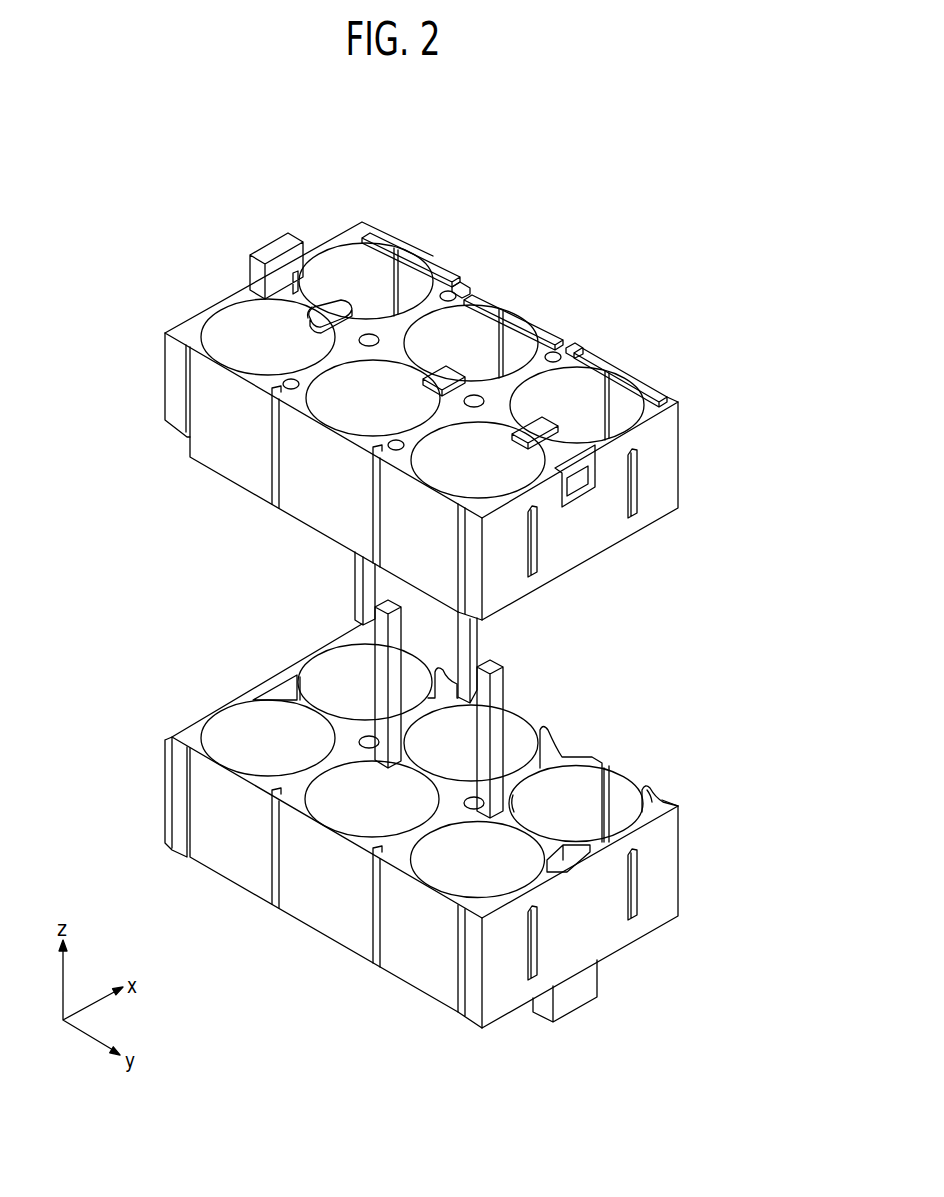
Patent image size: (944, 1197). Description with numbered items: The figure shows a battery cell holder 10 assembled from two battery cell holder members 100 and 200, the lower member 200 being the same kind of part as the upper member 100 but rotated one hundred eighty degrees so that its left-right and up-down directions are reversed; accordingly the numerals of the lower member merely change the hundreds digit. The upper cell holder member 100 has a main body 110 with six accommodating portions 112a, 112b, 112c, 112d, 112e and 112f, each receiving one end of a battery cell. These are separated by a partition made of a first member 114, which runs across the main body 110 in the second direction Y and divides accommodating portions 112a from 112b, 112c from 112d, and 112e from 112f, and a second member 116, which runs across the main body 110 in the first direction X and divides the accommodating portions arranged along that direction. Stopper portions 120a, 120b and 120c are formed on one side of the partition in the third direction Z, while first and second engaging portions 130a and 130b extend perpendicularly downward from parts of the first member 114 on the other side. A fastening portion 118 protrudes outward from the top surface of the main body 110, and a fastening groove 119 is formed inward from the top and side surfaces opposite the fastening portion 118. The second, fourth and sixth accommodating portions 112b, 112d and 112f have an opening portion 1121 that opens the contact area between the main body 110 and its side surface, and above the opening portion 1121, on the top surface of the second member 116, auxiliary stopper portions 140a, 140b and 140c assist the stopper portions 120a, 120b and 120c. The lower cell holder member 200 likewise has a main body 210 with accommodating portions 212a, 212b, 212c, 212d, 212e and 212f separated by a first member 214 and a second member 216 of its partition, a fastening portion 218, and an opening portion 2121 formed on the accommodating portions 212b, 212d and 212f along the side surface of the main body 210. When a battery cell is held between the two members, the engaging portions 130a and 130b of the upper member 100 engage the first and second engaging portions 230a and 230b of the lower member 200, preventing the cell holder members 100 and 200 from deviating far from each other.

The battery cell holder 10 is at (171, 112).
The battery cell holder member 100 is at (128, 238).
The main body 110 is at (668, 486).
The first accommodating portion 112a is at (225, 338).
The second accommodating portion 112b is at (363, 270).
The third accommodating portion 112c is at (354, 417).
The fourth accommodating portion 112d is at (459, 325).
The fifth accommodating portion 112e is at (492, 473).
The sixth accommodating portion 112f is at (578, 383).
The opening portion 1121 is at (336, 322).
The first member of partition 114 is at (312, 304).
The second member of partition 116 is at (450, 282).
The fastening portion 118 is at (250, 263).
The fastening groove 119 is at (576, 482).
The stopper portion 120a is at (340, 297).
The stopper portion 120b is at (451, 375).
The stopper portion 120c is at (556, 425).
The first engaging portion 130a is at (365, 580).
The second engaging portion 130b is at (476, 634).
The auxiliary stopper portion 140a is at (384, 237).
The auxiliary stopper portion 140b is at (548, 332).
The auxiliary stopper portion 140c is at (644, 388).
The battery cell holder member 200 is at (128, 708).
The main body 210 is at (670, 892).
The first accommodating portion 212a is at (444, 875).
The second accommodating portion 212b is at (578, 778).
The third accommodating portion 212c is at (351, 827).
The fourth accommodating portion 212d is at (463, 730).
The fifth accommodating portion 212e is at (241, 765).
The sixth accommodating portion 212f is at (339, 679).
The opening portion 2121 is at (620, 800).
The first member of partition 214 is at (515, 802).
The second member of partition 216 is at (553, 762).
The fastening portion 218 is at (582, 983).
The first engaging portion 230a is at (497, 682).
The second engaging portion 230b is at (380, 663).